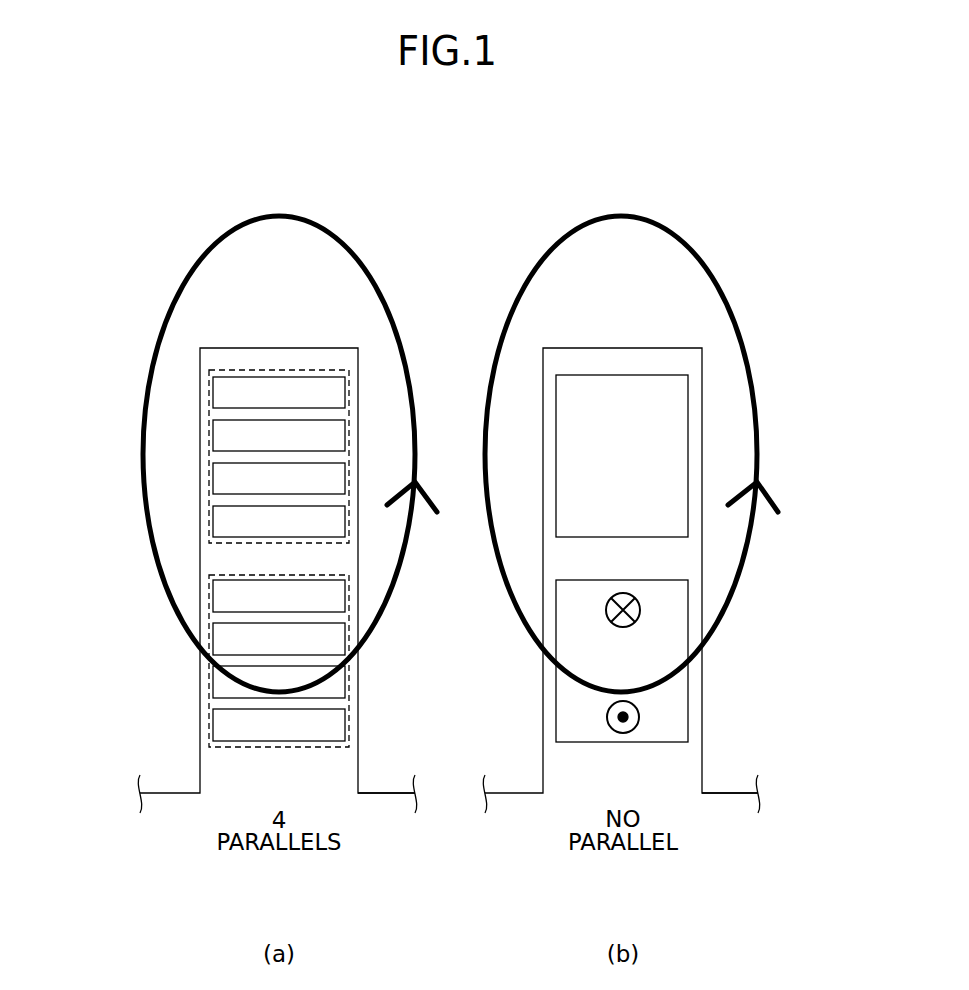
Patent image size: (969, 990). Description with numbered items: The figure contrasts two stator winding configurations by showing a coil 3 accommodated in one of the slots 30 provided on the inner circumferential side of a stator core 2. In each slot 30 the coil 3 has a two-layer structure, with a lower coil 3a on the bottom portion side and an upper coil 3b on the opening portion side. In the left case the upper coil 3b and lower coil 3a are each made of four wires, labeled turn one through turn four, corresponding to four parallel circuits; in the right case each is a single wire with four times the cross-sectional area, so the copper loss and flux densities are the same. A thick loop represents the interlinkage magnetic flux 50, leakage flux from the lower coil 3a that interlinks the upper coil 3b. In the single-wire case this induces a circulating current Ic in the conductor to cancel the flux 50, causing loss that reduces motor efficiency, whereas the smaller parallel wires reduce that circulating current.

The stator core 2 is at (170, 763).
The coil 3 is at (449, 558).
The lower coil 3a is at (209, 483).
The upper coil 3b is at (447, 661).
The slot 30 is at (355, 777).
The interlinkage magnetic flux 50 is at (207, 248).
The circulating current Ic is at (607, 612).